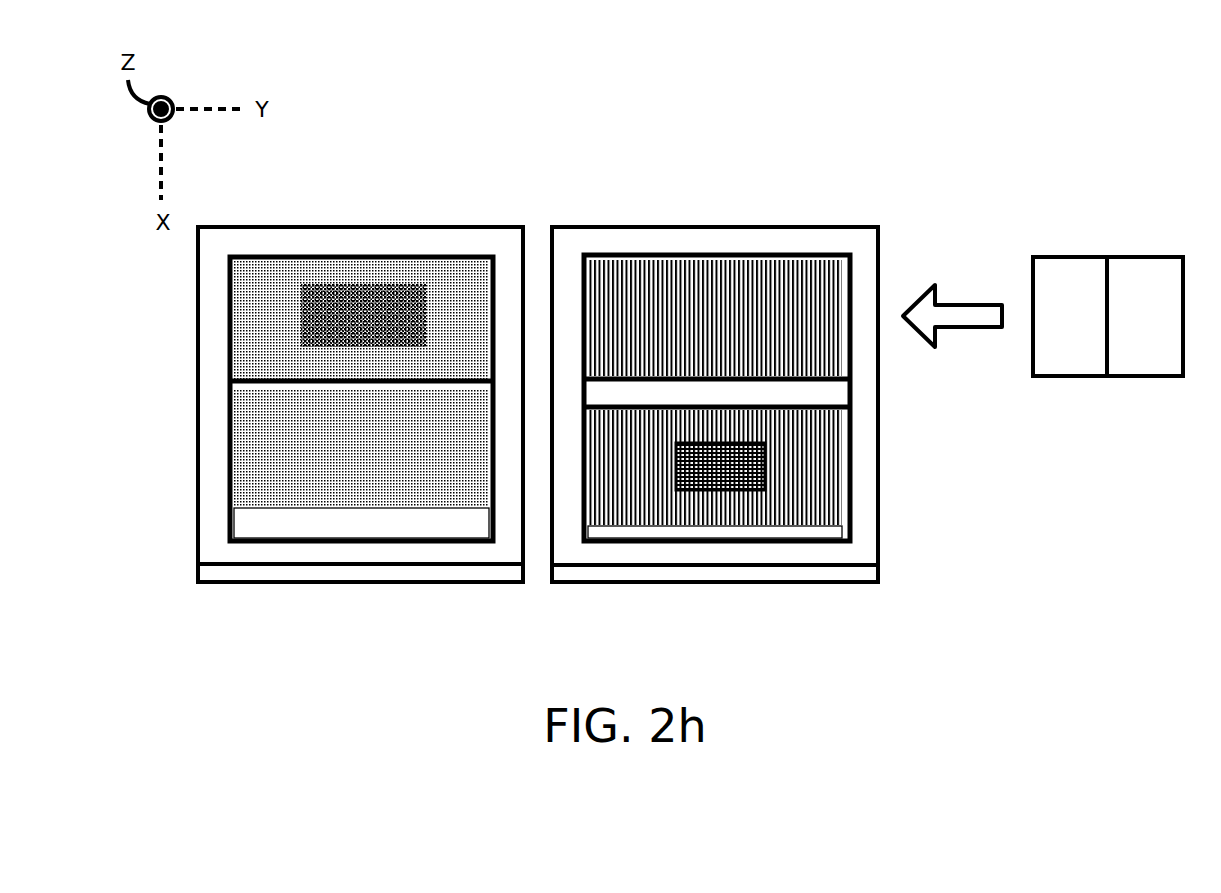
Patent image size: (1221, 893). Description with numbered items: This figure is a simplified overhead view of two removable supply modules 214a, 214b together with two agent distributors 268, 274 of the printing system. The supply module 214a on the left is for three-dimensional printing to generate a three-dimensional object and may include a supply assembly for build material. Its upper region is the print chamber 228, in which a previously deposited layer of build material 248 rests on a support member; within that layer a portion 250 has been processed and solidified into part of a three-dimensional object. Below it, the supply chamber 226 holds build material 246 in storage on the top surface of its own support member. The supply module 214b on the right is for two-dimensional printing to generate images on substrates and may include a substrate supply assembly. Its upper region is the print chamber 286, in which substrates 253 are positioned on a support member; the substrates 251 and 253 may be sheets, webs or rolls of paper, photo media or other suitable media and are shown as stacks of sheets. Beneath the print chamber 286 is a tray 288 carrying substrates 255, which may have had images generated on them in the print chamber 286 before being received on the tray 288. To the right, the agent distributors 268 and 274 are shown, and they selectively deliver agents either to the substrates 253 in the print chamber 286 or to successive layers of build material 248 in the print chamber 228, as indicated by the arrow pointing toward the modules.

The supply module 214a is at (362, 406).
The supply module 214b is at (716, 406).
The print chamber 228 is at (307, 255).
The previously deposited layer of build material 248 is at (327, 273).
The portion 250 is at (415, 285).
The build material 246 is at (316, 510).
The supply chamber 226 is at (427, 510).
The print chamber 286 is at (661, 255).
The substrates 253 is at (727, 278).
The substrates 251 is at (670, 525).
The substrates 255 is at (757, 490).
The tray 288 is at (773, 528).
The agent distributor 268 is at (1053, 257).
The agent distributor 274 is at (1168, 257).